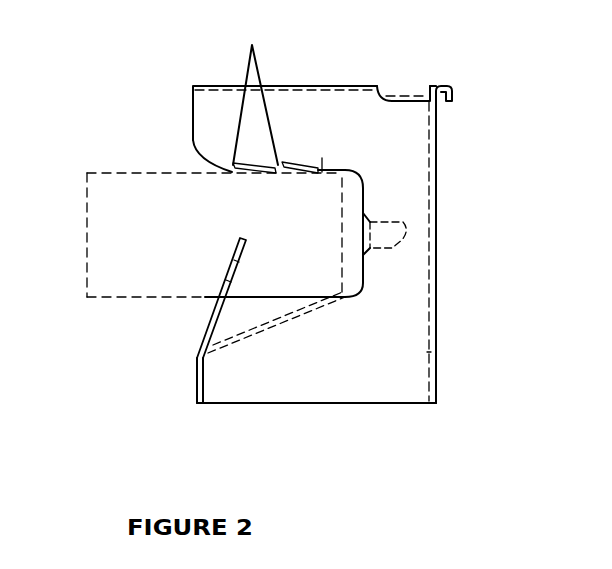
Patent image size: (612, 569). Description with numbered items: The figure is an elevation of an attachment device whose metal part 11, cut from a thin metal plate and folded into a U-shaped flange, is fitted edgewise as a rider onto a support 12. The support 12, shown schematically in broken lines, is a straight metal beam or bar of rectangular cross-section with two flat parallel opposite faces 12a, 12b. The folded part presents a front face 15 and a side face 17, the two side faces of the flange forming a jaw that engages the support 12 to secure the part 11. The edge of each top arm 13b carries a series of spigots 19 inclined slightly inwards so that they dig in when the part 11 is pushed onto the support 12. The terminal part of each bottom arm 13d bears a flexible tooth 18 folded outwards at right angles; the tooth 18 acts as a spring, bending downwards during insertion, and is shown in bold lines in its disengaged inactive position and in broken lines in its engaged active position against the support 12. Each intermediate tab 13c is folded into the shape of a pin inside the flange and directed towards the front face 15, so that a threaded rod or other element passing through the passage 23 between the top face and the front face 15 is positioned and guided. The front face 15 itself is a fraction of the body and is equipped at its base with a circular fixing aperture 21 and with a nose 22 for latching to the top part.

The metal part 11 is at (244, 405).
The support 12 is at (107, 205).
The flat parallel face of support 12a is at (137, 172).
The flat parallel face of support 12b is at (101, 302).
The top arm 13b is at (312, 115).
The intermediate tab 13c is at (390, 232).
The bottom arm 13d is at (330, 369).
The front face 15 is at (436, 183).
The side face 17 is at (410, 294).
The flexible tooth 18 is at (212, 313).
The spigot 19 is at (277, 96).
The circular fixing aperture 21 is at (431, 325).
The nose 22 is at (451, 88).
The passage 23 is at (398, 94).